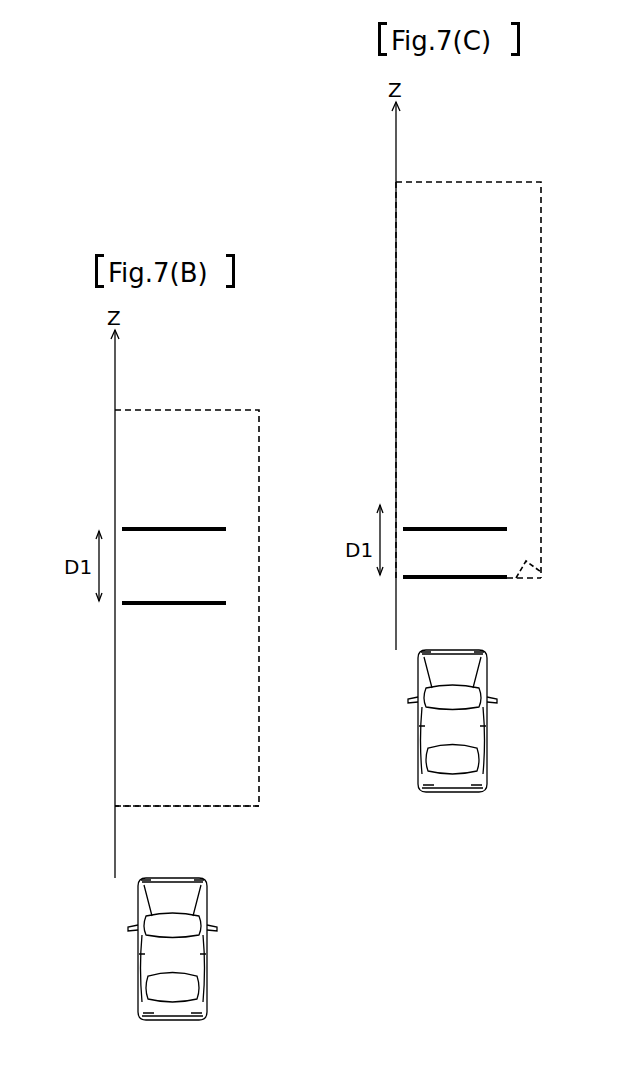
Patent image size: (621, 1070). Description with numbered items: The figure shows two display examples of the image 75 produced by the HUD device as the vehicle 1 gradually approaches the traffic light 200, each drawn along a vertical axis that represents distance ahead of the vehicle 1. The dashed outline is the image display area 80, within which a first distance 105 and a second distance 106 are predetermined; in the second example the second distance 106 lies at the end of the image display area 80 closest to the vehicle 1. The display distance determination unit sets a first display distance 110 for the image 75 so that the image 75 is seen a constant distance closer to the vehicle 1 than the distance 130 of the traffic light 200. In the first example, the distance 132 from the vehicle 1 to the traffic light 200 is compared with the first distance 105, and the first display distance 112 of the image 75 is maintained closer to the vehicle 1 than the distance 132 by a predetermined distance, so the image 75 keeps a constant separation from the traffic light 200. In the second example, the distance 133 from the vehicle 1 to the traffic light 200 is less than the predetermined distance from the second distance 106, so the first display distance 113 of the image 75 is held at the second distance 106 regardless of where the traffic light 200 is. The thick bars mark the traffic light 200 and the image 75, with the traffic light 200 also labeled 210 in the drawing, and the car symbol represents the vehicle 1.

In FIG. 7B, the vehicle 1 is at (205, 915).
In FIG. 7C, the vehicle 1 is at (486, 690).
In FIG. 7B, the image 75 is at (214, 603).
In FIG. 7C, the image 75 is at (445, 577).
In FIG. 7B, the image display area 80 is at (259, 808).
In FIG. 7C, the image display area 80 is at (541, 580).
In FIG. 7B, the first distance 105 is at (240, 410).
In FIG. 7C, the first distance 105 is at (524, 182).
In FIG. 7C, the second distance 106 is at (543, 566).
In FIG. 7B, the first display distance 110 is at (138, 616).
In FIG. 7C, the first display distance 110 is at (418, 588).
In FIG. 7B, the first display distance 112 is at (122, 603).
In FIG. 7C, the first display distance 113 is at (403, 577).
In FIG. 7B, the distance of the traffic light 130 is at (138, 515).
In FIG. 7C, the distance of the traffic light 130 is at (418, 520).
In FIG. 7B, the distance from the vehicle to the traffic light 132 is at (122, 529).
In FIG. 7C, the distance from the vehicle to the traffic light 133 is at (400, 503).
In FIG. 7B, the traffic light 200 is at (136, 529).
In FIG. 7C, the traffic light 200 is at (416, 529).
In FIG. 7B, the sensor unit 210 is at (184, 511).
In FIG. 7C, the sensor unit 210 is at (465, 511).